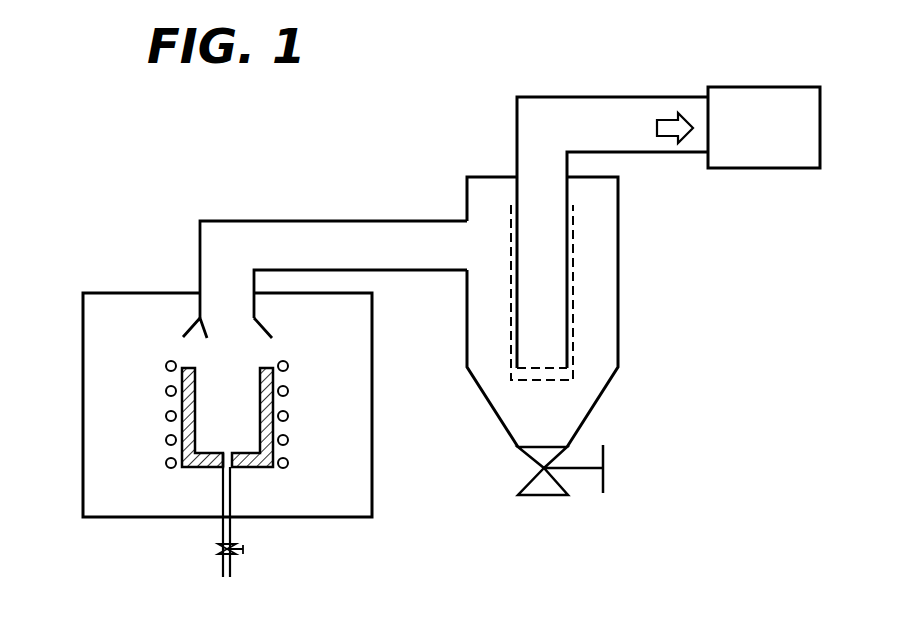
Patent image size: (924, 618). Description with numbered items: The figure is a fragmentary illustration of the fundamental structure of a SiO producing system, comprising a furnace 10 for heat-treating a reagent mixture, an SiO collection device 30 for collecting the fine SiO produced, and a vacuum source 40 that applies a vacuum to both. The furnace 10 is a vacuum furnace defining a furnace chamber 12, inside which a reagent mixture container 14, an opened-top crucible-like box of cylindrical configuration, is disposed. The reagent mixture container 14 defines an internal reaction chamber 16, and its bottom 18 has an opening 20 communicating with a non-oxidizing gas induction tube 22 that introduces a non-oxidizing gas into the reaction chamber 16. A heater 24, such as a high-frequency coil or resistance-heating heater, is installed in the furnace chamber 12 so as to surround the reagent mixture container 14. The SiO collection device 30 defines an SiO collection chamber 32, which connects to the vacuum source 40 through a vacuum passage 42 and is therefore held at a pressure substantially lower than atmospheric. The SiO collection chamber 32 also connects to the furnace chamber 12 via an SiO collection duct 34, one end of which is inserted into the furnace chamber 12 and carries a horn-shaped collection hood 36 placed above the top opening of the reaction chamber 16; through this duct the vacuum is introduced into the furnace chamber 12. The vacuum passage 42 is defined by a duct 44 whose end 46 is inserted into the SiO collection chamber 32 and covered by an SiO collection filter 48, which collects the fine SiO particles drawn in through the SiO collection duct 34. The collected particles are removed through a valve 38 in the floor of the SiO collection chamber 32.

The furnace 10 is at (83, 403).
The furnace chamber 12 is at (357, 437).
The reagent mixture container 14 is at (287, 381).
The reaction chamber 16 is at (182, 430).
The bottom 18 is at (200, 467).
The opening 20 is at (225, 477).
The non-oxidizing gas induction tube 22 is at (232, 530).
The heater 24 is at (165, 365).
The SiO collection device 30 is at (620, 272).
The SiO collection chamber 32 is at (602, 338).
The SiO collection duct 34 is at (348, 228).
The horn-shaped collection hood 36 is at (205, 338).
The valve 38 is at (540, 497).
The vacuum source 40 is at (786, 86).
The vacuum passage 42 is at (608, 112).
The duct 44 is at (542, 97).
The end of duct 46 is at (567, 292).
The SiO collection filter 48 is at (572, 358).